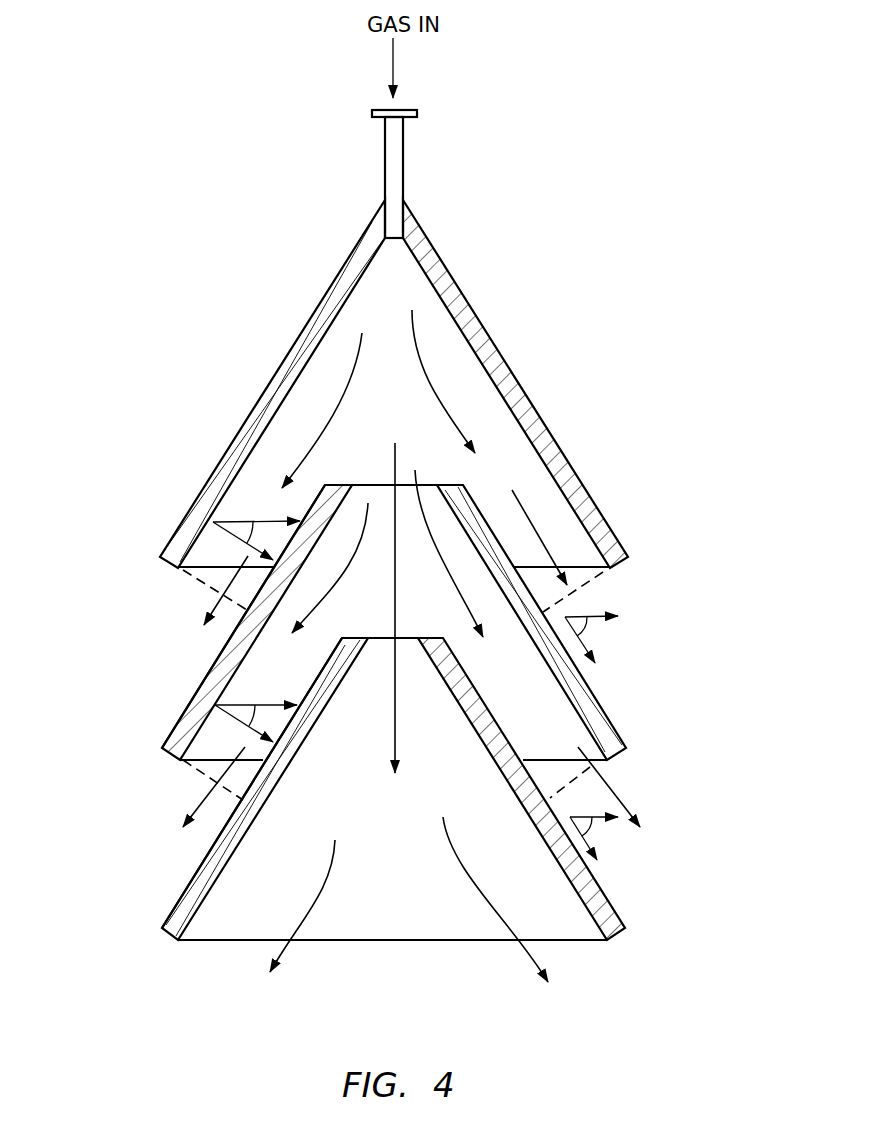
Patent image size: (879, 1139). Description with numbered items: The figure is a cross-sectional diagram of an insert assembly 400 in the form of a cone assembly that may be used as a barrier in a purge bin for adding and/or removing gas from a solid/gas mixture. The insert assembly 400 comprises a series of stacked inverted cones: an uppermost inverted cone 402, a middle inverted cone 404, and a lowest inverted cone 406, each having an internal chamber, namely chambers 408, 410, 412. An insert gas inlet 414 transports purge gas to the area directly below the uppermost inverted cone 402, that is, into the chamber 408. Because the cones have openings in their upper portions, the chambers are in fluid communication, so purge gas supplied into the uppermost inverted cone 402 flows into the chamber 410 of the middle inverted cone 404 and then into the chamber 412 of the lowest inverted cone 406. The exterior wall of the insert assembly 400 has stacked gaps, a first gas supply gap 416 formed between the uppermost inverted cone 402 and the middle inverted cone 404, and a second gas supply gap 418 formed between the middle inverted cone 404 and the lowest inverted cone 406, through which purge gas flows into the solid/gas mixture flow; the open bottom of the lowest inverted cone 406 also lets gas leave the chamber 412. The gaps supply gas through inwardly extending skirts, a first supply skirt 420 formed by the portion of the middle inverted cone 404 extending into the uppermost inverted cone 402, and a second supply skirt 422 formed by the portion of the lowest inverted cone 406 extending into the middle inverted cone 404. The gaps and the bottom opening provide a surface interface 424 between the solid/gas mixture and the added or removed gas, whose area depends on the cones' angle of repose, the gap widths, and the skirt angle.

The insert assembly 400 is at (642, 180).
The uppermost inverted cone 402 is at (322, 300).
The middle inverted cone 404 is at (310, 512).
The lowest inverted cone 406 is at (603, 888).
The chamber 408 is at (460, 355).
The chamber 410 is at (532, 492).
The chamber 412 is at (263, 893).
The insert gas inlet 414 is at (385, 128).
The first gas supply gap 416 is at (190, 595).
The second gas supply gap 418 is at (197, 773).
The first supply skirt 420 is at (203, 678).
The second supply skirt 422 is at (197, 872).
The surface interface 424 is at (193, 573).